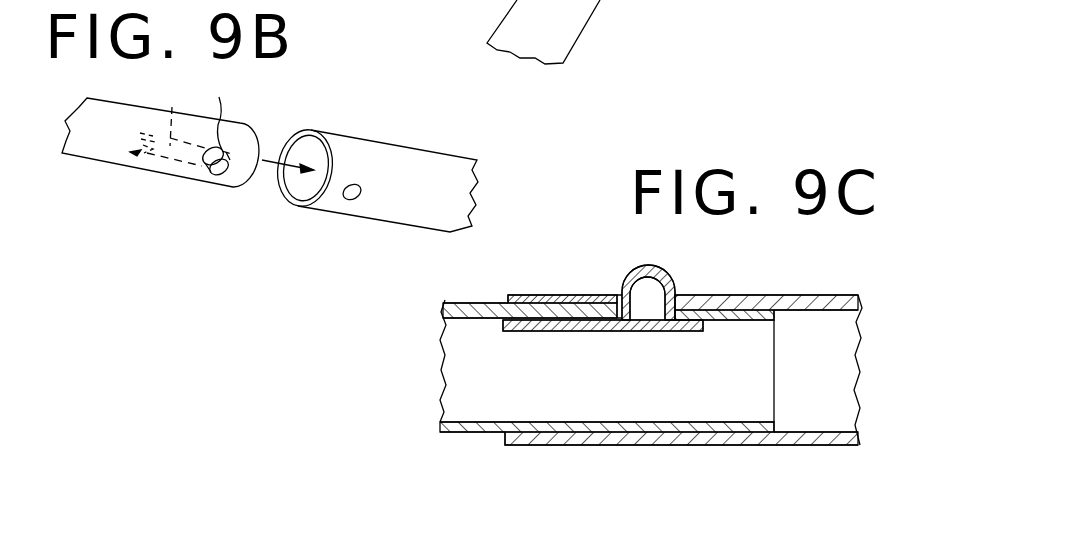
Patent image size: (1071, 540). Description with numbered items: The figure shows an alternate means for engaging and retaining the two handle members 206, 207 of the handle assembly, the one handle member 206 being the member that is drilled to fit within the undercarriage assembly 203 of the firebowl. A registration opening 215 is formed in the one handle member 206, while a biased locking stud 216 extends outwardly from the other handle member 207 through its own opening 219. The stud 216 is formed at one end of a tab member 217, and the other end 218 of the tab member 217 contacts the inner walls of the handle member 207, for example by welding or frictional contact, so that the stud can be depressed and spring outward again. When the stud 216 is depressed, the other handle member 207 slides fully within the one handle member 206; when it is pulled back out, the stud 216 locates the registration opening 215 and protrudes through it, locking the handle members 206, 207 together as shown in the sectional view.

In FIG. 9B, the undercarriage assembly 203 is at (570, 15).
In FIG. 9B, the handle member 206 is at (378, 222).
In FIG. 9C, the handle member 206 is at (792, 296).
In FIG. 9B, the handle member 207 is at (175, 178).
In FIG. 9C, the handle member 207 is at (745, 422).
In FIG. 9B, the registration opening 215 is at (358, 183).
In FIG. 9C, the registration opening 215 is at (624, 291).
In FIG. 9B, the locking stud 216 is at (220, 180).
In FIG. 9C, the locking stud 216 is at (643, 264).
In FIG. 9B, the tab member 217 is at (167, 97).
In FIG. 9C, the tab member 217 is at (563, 332).
In FIG. 9B, the other end of the tab member 218 is at (135, 153).
In FIG. 9C, the other end of the tab member 218 is at (503, 320).
In FIG. 9B, the opening 219 is at (230, 112).
In FIG. 9C, the opening 219 is at (658, 319).